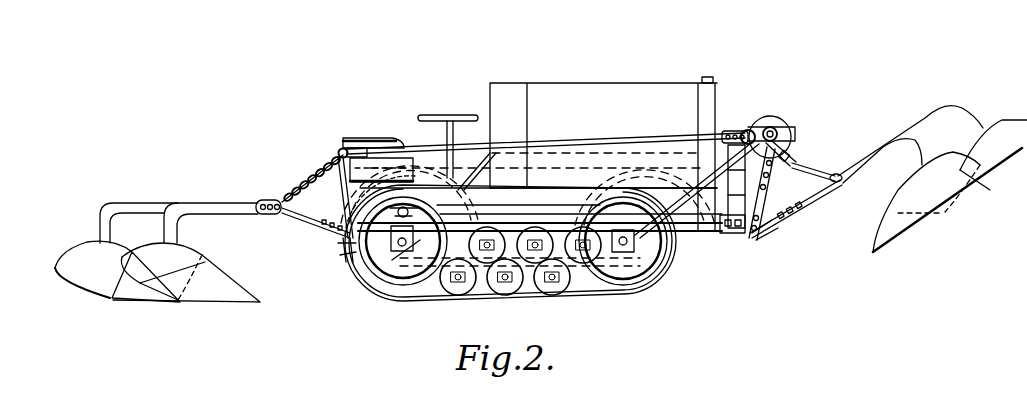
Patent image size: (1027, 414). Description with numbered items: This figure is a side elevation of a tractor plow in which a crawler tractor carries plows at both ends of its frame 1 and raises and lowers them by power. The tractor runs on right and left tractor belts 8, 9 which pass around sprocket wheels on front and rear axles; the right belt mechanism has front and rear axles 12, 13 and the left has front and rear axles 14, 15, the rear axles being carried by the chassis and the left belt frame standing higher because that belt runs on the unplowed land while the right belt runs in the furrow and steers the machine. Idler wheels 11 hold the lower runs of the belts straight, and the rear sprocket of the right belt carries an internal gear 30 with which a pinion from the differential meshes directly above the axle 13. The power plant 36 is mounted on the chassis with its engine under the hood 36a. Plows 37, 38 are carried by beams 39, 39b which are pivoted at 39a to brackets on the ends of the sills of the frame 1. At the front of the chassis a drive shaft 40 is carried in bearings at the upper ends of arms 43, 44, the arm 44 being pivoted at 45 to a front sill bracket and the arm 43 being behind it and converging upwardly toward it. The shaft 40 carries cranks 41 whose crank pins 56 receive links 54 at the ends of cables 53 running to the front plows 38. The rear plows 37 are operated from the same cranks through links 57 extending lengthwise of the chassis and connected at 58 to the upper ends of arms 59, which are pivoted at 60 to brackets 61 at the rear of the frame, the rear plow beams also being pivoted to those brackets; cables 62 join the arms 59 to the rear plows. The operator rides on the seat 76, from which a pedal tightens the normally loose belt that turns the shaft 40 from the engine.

The frame 1 is at (541, 218).
The right tractor belt 8 is at (515, 192).
The left tractor belt 9 is at (563, 158).
The idler wheels 11 is at (533, 290).
The front axle 12 is at (660, 248).
The rear axle 13 is at (412, 257).
The front axle 14 is at (647, 215).
The rear axle 15 is at (436, 216).
The internal gear 30 is at (504, 245).
The power plant 36 is at (506, 77).
The hood 36a is at (577, 90).
The plows 37 is at (157, 271).
The plows 38 is at (418, 165).
The plow beams 39 is at (203, 208).
The pivots 39a is at (352, 224).
The plow beams 39b is at (878, 140).
The drive shaft 40 is at (797, 120).
The cranks 41 is at (768, 127).
The arm 43 is at (703, 187).
The arm 44 is at (776, 182).
The pivot 45 is at (777, 212).
The cables 53 is at (806, 165).
The link 54 is at (790, 146).
The crank pin 56 is at (748, 130).
The links 57 is at (550, 146).
The connection 58 is at (340, 150).
The arms 59 is at (342, 196).
The pivot 60 is at (338, 243).
The brackets 61 is at (340, 253).
The cables 62 is at (312, 183).
The seat 76 is at (366, 138).